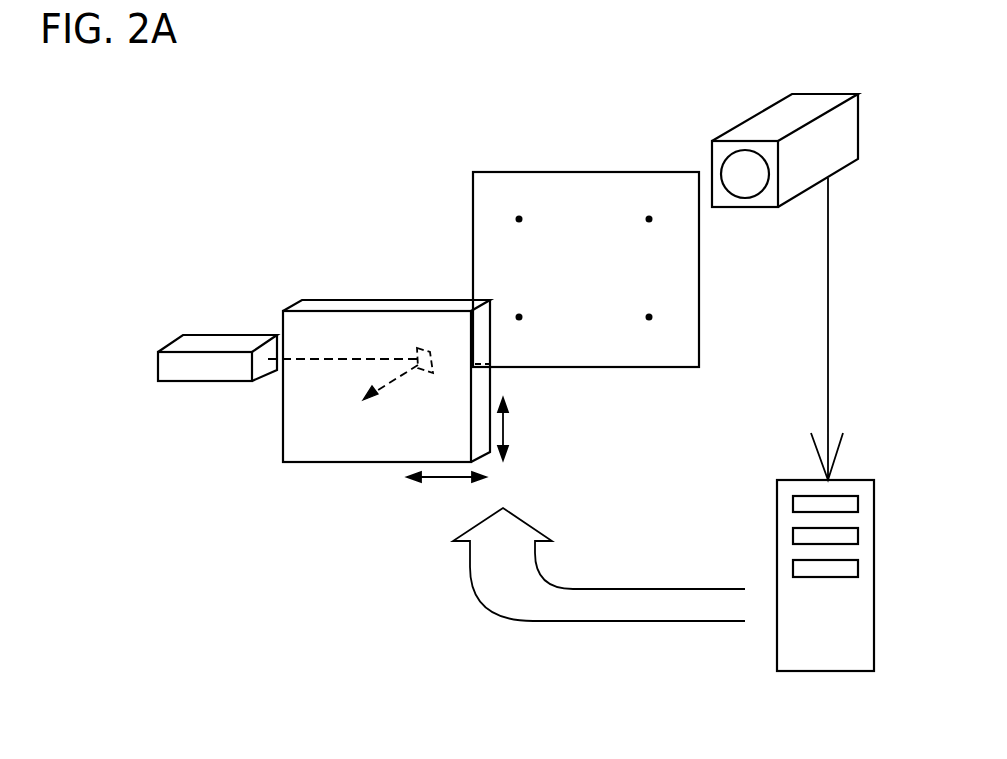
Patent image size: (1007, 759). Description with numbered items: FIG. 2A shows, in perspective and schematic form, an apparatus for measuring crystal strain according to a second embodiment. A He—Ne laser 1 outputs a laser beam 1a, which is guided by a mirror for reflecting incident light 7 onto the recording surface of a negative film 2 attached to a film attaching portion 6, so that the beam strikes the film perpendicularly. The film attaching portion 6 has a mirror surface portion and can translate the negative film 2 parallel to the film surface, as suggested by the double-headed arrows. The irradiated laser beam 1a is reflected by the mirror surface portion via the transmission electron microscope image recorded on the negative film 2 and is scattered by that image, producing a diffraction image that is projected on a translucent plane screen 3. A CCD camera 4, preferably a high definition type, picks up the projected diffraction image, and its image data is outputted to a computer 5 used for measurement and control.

The He—Ne laser 1 is at (198, 375).
The laser beam 1a is at (312, 360).
The negative film 2 is at (318, 300).
The translucent plane screen 3 is at (478, 185).
The CCD camera 4 is at (748, 127).
The computer 5 is at (781, 551).
The film attaching portion 6 is at (365, 447).
The mirror for reflecting incident light 7 is at (418, 348).